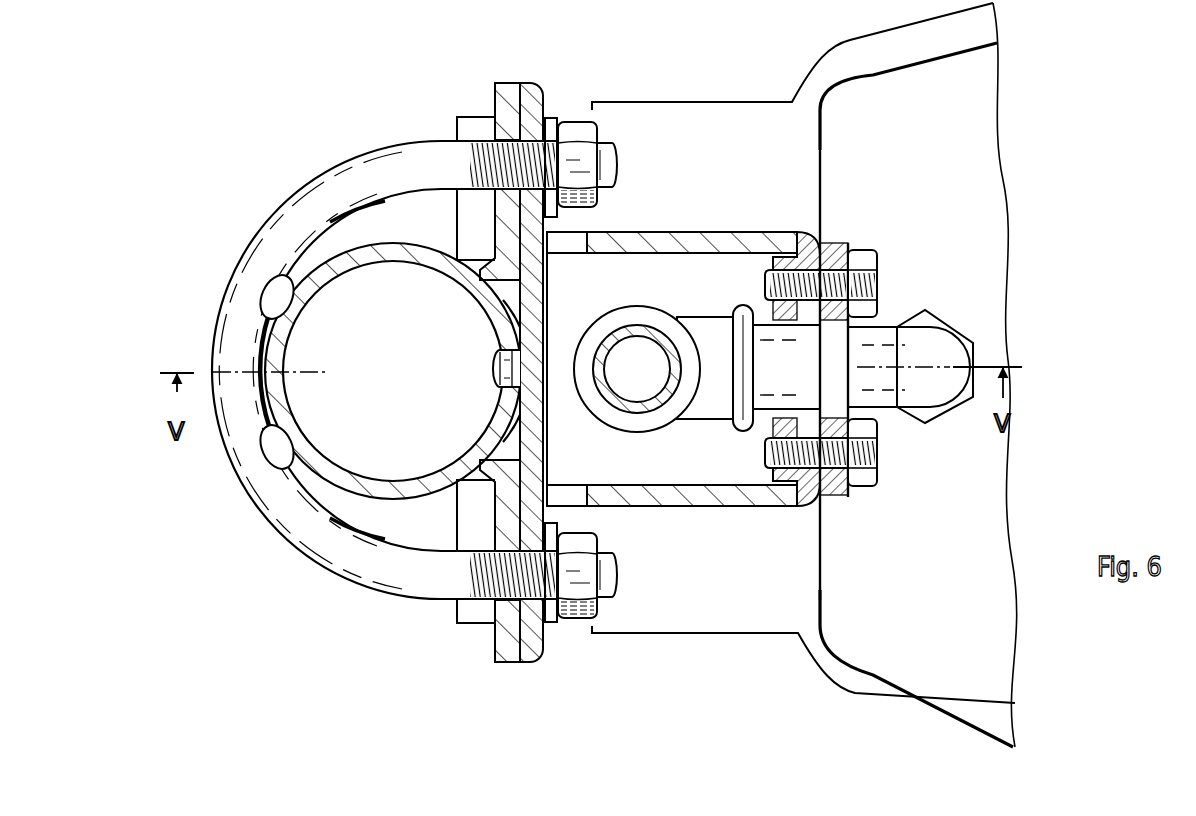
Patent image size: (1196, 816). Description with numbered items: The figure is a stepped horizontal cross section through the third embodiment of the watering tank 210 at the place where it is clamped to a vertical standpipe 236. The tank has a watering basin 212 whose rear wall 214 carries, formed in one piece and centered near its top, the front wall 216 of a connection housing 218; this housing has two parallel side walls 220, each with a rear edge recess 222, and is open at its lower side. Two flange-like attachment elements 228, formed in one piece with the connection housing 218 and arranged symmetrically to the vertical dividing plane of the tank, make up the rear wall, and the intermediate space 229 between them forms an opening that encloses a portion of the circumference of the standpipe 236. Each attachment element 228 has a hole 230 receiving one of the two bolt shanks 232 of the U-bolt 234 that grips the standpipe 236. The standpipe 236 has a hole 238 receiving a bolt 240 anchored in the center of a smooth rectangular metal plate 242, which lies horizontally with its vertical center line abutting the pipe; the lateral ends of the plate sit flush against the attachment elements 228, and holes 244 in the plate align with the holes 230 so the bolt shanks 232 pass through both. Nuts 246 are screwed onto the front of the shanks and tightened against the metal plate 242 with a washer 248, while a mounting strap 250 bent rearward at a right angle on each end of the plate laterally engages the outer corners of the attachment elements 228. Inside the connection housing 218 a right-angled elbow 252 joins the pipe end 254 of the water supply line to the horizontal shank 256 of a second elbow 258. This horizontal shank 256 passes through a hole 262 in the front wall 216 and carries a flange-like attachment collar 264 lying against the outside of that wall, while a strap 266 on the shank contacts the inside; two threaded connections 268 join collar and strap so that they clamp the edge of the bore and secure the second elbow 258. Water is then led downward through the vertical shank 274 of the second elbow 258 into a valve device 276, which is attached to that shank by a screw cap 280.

The watering tank 210 is at (830, 694).
The watering basin 212 is at (912, 702).
The rear wall 214 is at (822, 556).
The front wall 216 is at (810, 252).
The connection housing 218 is at (706, 357).
The side walls 220 is at (673, 240).
The rear edge recess 222 is at (584, 243).
The attachment elements 228 is at (507, 127).
The intermediate space 229 is at (500, 300).
The hole 230 is at (482, 192).
The bolt shanks 232 is at (613, 152).
The U-bolt 234 is at (313, 568).
The standpipe 236 is at (355, 445).
The hole 238 is at (494, 360).
The bolt 240 is at (496, 382).
The metal plate 242 is at (548, 312).
The holes 244 is at (545, 112).
The nuts 246 is at (590, 125).
The washer 248 is at (555, 216).
The mounting strap 250 is at (514, 83).
The right-angled elbow 252 is at (703, 328).
The pipe end 254 is at (643, 330).
The horizontal shank 256 is at (926, 356).
The second elbow 258 is at (893, 328).
The hole 262 is at (808, 312).
The attachment collar 264 is at (840, 487).
The strap 266 is at (748, 426).
The threaded connections 268 is at (766, 284).
The vertical shank 274 is at (955, 347).
The valve device 276 is at (948, 415).
The screw cap 280 is at (940, 373).